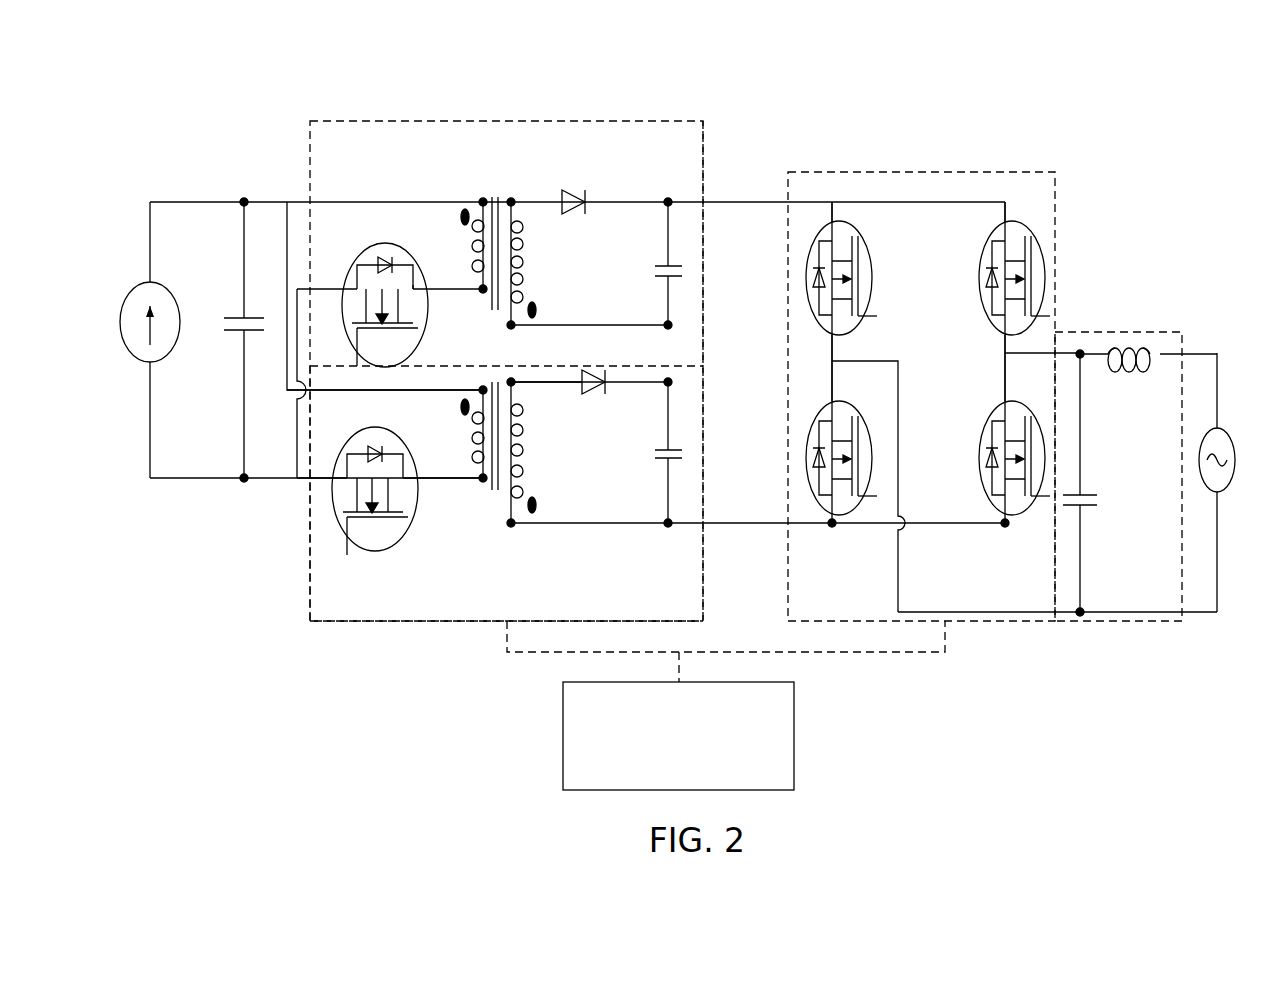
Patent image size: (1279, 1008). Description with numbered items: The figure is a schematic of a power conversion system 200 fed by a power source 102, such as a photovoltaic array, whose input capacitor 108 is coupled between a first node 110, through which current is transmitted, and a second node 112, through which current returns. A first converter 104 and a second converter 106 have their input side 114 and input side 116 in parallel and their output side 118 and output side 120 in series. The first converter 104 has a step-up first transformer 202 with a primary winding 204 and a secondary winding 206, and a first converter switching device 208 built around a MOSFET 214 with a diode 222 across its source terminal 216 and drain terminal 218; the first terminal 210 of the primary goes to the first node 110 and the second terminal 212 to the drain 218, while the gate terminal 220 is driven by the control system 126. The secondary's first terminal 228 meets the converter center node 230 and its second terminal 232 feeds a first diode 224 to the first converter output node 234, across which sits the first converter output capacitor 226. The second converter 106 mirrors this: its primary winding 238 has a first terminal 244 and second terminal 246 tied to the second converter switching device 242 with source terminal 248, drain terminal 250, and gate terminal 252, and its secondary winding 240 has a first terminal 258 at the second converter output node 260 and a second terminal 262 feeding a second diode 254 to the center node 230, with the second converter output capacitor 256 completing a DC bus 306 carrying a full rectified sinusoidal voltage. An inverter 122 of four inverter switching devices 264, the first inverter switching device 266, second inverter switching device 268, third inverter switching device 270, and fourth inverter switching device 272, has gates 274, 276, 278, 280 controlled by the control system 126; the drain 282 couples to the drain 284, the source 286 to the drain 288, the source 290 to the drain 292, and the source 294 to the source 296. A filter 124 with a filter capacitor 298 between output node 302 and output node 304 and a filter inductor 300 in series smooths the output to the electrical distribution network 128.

The power source 102 is at (162, 284).
The first converter 104 is at (415, 120).
The second converter 106 is at (414, 623).
The input capacitor 108 is at (239, 312).
The first node 110 is at (245, 200).
The second node 112 is at (244, 482).
The input side 114 is at (288, 140).
The input side 116 is at (292, 548).
The output side 118 is at (729, 140).
The output side 120 is at (724, 565).
The inverter 122 is at (882, 170).
The filter 124 is at (1170, 330).
The control system 126 is at (796, 736).
The electrical distribution network 128 is at (1233, 445).
The power conversion system 200 is at (1062, 120).
The first transformer 202 is at (497, 176).
The primary winding 204 is at (468, 234).
The secondary winding 206 is at (528, 250).
The first converter switching device 208 is at (368, 250).
The first terminal 210 is at (483, 200).
The second terminal 212 is at (483, 289).
The MOSFET 214 is at (390, 345).
The source terminal 216 is at (352, 288).
The drain terminal 218 is at (442, 288).
The gate terminal 220 is at (355, 363).
The diode 222 is at (382, 253).
The first diode 224 is at (574, 180).
The first converter output capacitor 226 is at (666, 262).
The first terminal 228 is at (511, 327).
The converter center node 230 is at (666, 380).
The second terminal 232 is at (511, 200).
The first converter output node 234 is at (668, 200).
The primary winding 238 is at (464, 423).
The secondary winding 240 is at (532, 476).
The second converter switching device 242 is at (414, 515).
The first terminal 244 is at (483, 388).
The second terminal 246 is at (483, 480).
The source terminal 248 is at (318, 482).
The drain terminal 250 is at (451, 476).
The gate terminal 252 is at (348, 553).
The second diode 254 is at (596, 402).
The second converter output capacitor 256 is at (654, 460).
The first terminal 258 is at (511, 526).
The second converter output node 260 is at (668, 526).
The second terminal 262 is at (513, 384).
The inverter switching device 264 is at (859, 238).
The first inverter switching device 266 is at (822, 234).
The second inverter switching device 268 is at (822, 417).
The third inverter switching device 270 is at (1043, 242).
The fourth inverter switching device 272 is at (1010, 402).
The gate 274 is at (878, 316).
The gate 276 is at (878, 497).
The gate 278 is at (1050, 316).
The gate 280 is at (1050, 495).
The drain 282 is at (835, 214).
The drain 284 is at (1008, 214).
The source 286 is at (830, 360).
The drain 288 is at (835, 392).
The source 290 is at (1004, 353).
The drain 292 is at (1004, 377).
The source 294 is at (835, 526).
The source 296 is at (1007, 526).
The filter capacitor 298 is at (1093, 514).
The filter inductor 300 is at (1134, 382).
The output node 302 is at (1082, 615).
The output node 304 is at (1082, 352).
The DC bus 306 is at (666, 323).